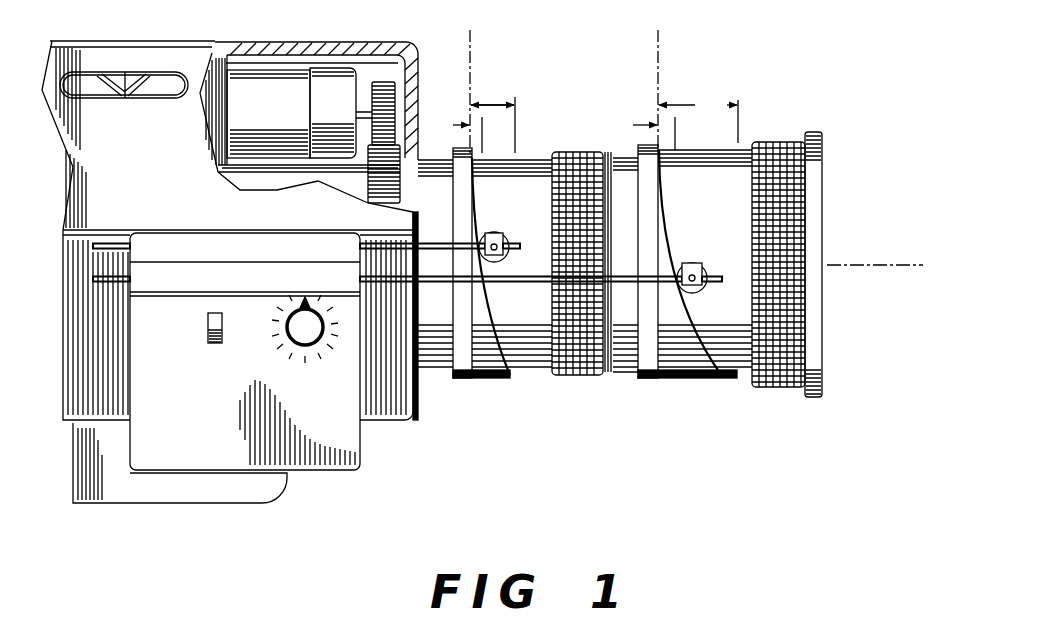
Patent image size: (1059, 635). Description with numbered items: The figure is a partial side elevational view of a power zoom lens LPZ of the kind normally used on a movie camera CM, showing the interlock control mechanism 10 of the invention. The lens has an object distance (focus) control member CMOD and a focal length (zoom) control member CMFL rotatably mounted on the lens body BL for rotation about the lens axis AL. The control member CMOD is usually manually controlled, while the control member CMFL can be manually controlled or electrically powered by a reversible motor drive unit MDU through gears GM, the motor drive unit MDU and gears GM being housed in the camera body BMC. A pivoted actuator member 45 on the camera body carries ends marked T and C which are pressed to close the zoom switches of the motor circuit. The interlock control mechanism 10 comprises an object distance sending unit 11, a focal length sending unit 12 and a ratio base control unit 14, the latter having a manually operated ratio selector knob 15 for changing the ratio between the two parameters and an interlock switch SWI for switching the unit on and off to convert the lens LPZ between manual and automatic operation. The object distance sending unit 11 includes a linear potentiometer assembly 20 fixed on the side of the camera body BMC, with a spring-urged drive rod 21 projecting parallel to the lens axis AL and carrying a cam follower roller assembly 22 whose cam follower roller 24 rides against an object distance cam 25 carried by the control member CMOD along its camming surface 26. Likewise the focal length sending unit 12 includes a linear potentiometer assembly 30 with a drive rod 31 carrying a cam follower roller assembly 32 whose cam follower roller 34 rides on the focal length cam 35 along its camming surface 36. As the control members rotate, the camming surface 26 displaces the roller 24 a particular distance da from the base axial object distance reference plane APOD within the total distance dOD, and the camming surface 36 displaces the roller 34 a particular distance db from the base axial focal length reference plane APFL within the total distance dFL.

The interlock control mechanism 10 is at (361, 446).
The object distance sending unit 11 is at (131, 297).
The focal length sending unit 12 is at (256, 231).
The ratio base control unit 14 is at (207, 474).
The ratio selector knob 15 is at (299, 339).
The linear potentiometer assembly 20 is at (176, 289).
The drive rod 21 is at (647, 284).
The cam follower roller assembly 22 is at (703, 262).
The cam follower roller 24 is at (698, 296).
The object distance cam 25 is at (666, 216).
The object distance camming surface 26 is at (671, 244).
The linear potentiometer assembly 30 is at (206, 257).
The drive rod 31 is at (450, 243).
The cam follower roller assembly 32 is at (506, 233).
The cam follower roller 34 is at (500, 230).
The focal length cam 35 is at (454, 212).
The focal length camming surface 36 is at (493, 322).
The pivoted actuator member 45 is at (147, 98).
The camera body BMC is at (247, 43).
The movie camera CM is at (314, 34).
The motor drive unit MDU is at (235, 122).
The lens body BL is at (228, 176).
The gears GM is at (402, 141).
The interlock switch SWI is at (207, 332).
The base axial focal length reference plane APFL is at (473, 68).
The base axial object distance reference plane APOD is at (661, 68).
The total distance of the focal length camming surface range dFL is at (515, 105).
The particular distance db is at (482, 125).
The focal length control member CMFL is at (582, 146).
The power zoom lens LPZ is at (614, 152).
The total distance of the object distance camming surface range dOD is at (698, 119).
The particular distance da is at (675, 125).
The object distance control member CMOD is at (773, 133).
The lens axis AL is at (843, 263).